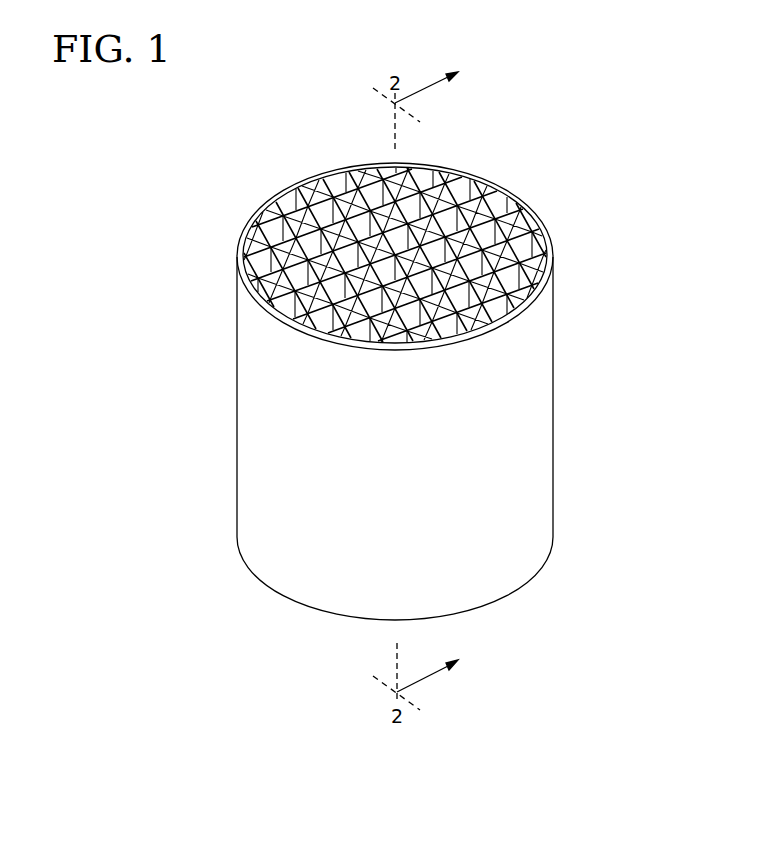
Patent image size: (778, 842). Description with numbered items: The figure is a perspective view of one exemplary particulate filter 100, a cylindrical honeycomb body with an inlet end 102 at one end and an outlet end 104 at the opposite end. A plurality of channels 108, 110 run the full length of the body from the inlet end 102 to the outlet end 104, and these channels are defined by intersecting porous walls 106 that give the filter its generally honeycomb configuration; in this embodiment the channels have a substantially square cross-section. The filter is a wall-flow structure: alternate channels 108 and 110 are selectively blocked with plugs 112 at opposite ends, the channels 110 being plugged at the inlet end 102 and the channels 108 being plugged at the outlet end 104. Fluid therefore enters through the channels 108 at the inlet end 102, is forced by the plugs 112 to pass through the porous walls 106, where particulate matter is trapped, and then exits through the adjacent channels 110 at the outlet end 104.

The particulate filter 100 is at (555, 150).
The inlet end 102 is at (528, 204).
The outlet end 104 is at (473, 605).
The porous walls 106 is at (467, 190).
The channels 108 is at (320, 203).
The channels 110 is at (290, 194).
The plugs 112 is at (335, 207).